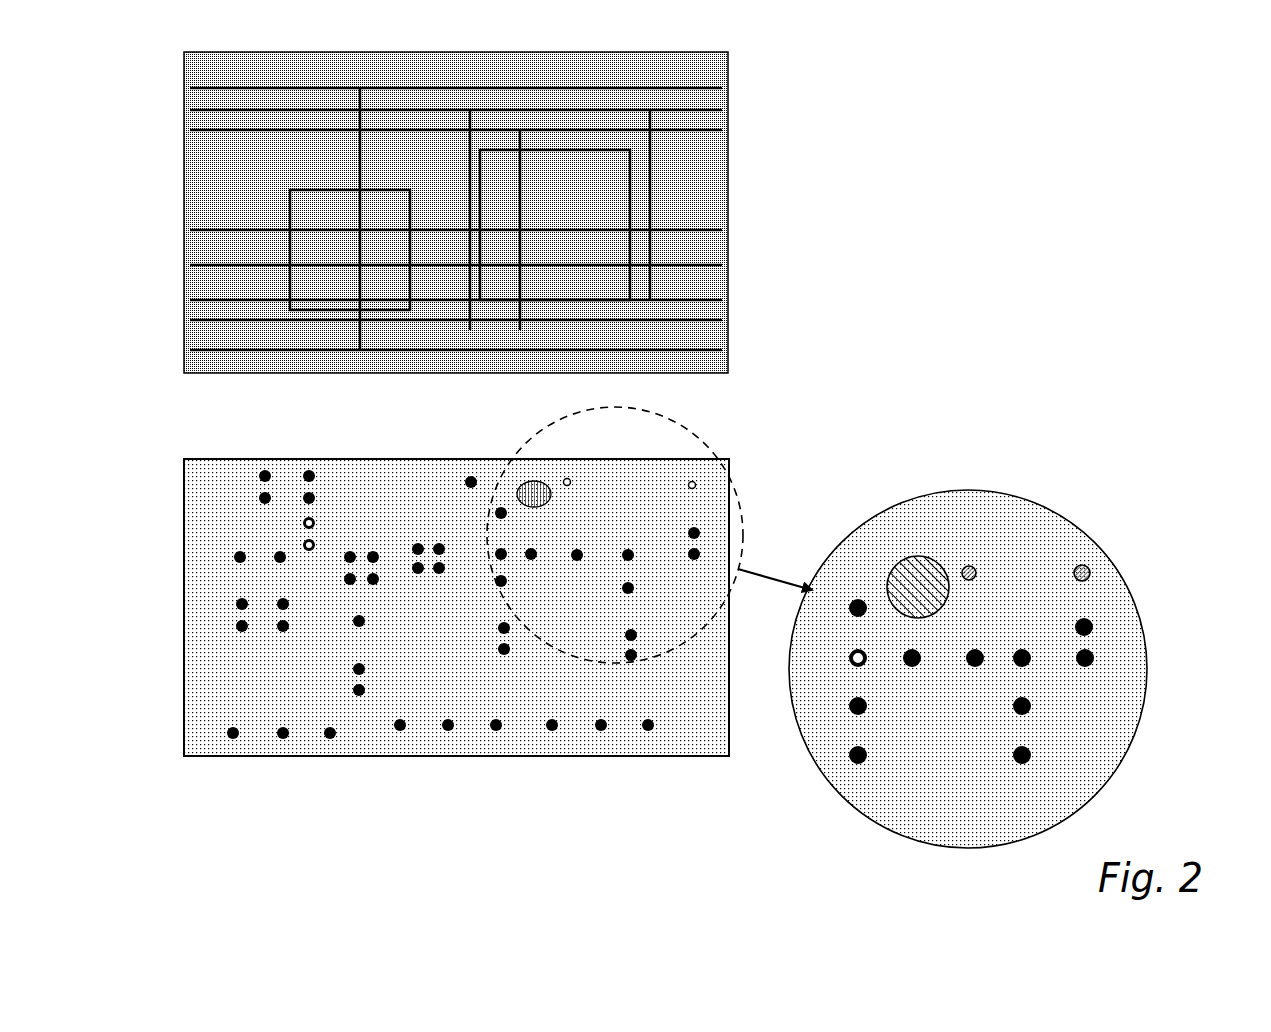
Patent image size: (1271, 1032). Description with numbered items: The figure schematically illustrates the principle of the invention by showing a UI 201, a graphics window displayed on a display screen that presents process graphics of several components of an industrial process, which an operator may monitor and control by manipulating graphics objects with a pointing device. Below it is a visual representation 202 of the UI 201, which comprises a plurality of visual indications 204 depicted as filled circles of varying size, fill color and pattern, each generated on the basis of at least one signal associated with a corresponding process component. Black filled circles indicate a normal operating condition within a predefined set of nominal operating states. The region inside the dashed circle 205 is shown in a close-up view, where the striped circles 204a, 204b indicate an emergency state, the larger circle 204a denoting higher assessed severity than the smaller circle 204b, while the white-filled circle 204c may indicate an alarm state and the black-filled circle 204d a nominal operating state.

The UI 201 is at (727, 206).
The visual representation 202 is at (216, 458).
The visual indications 204 is at (242, 628).
The circle 204a is at (915, 556).
The circle 204b is at (972, 566).
The circle 204c is at (1084, 565).
The circle 204d is at (1084, 620).
The dashed circle 205 is at (705, 446).